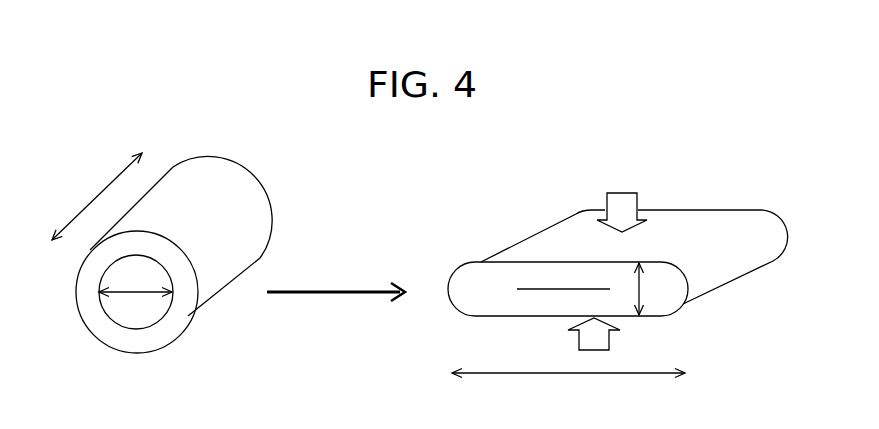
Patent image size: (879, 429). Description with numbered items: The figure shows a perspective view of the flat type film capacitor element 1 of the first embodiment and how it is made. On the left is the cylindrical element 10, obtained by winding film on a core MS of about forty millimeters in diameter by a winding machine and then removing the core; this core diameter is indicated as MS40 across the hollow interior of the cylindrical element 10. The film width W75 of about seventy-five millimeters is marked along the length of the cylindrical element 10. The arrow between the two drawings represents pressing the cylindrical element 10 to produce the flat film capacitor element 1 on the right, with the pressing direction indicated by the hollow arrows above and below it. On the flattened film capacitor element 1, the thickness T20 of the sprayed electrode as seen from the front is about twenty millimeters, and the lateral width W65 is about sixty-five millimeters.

The cylindrical element 10 is at (230, 200).
The film capacitor element 1 is at (690, 230).
The film width W75 is at (94, 196).
The core diameter MS40 is at (137, 293).
The thickness T20 is at (638, 284).
The lateral width W65 is at (568, 388).